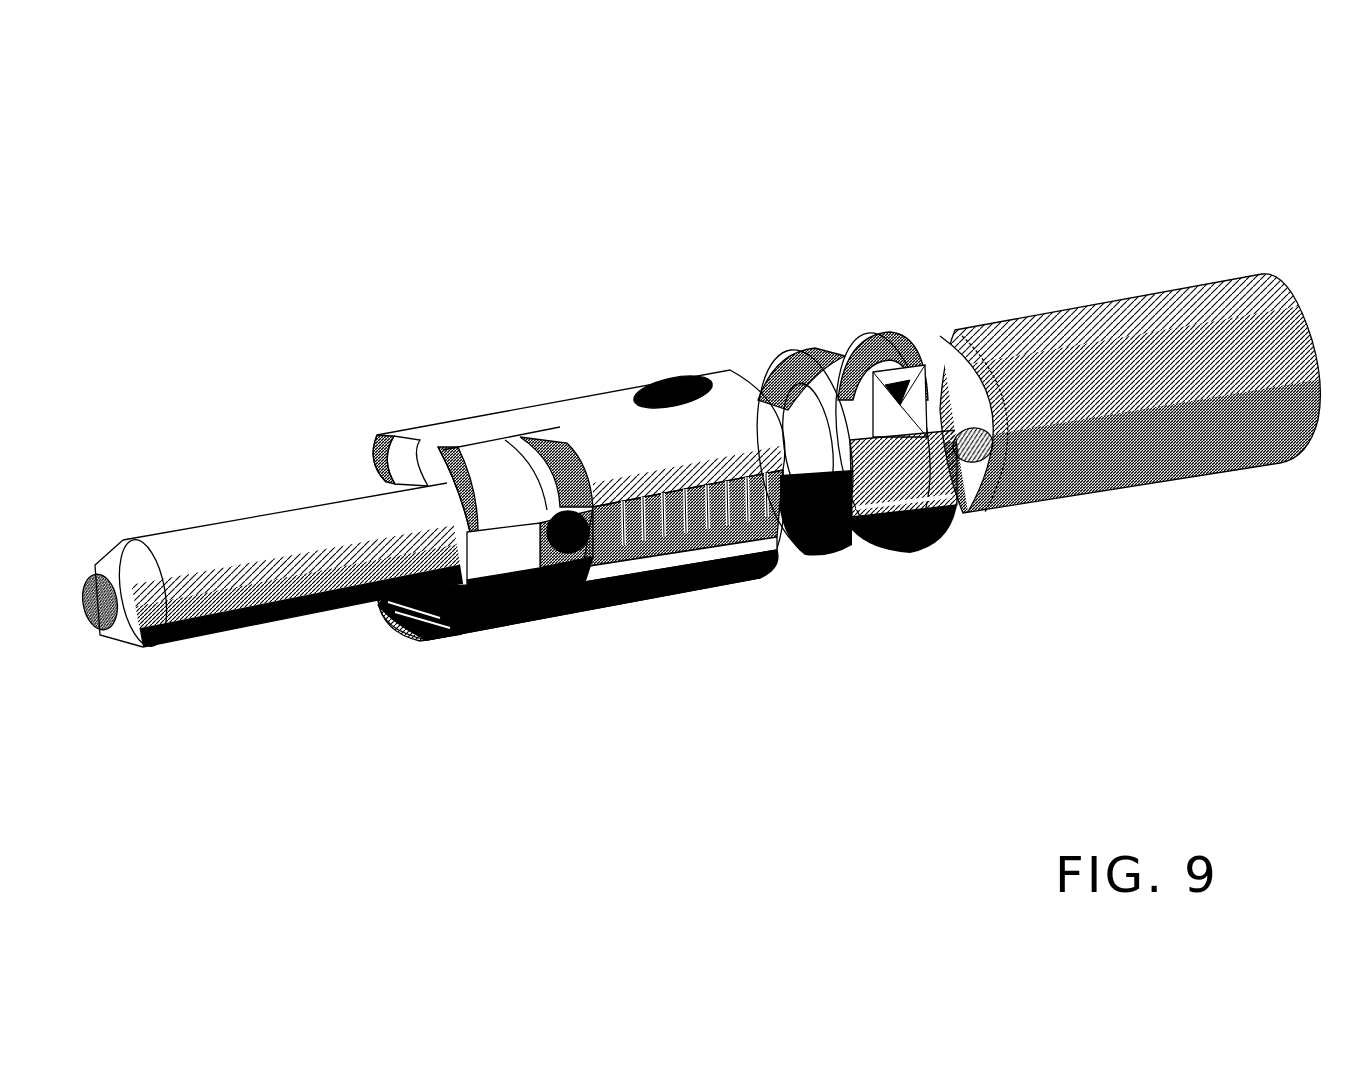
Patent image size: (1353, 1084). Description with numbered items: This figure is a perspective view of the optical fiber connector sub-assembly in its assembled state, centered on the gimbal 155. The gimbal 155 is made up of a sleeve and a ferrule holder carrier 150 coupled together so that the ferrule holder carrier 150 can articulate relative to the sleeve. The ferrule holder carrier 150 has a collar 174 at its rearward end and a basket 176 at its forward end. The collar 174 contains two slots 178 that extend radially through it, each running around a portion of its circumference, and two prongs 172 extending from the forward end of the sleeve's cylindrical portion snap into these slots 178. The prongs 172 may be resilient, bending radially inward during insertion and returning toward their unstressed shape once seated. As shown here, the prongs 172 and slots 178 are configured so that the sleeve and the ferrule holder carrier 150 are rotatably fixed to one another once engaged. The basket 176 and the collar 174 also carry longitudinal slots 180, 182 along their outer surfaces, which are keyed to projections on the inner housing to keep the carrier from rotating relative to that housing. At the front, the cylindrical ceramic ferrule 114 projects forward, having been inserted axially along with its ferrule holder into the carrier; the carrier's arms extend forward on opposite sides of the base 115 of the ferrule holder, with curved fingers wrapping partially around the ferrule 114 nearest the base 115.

The ferrule 114 is at (245, 535).
The base 115 is at (512, 636).
The ferrule holder carrier 150 is at (579, 576).
The gimbal 155 is at (750, 234).
The prongs 172 is at (871, 345).
The collar 174 is at (955, 527).
The basket 176 is at (452, 437).
The slots 178 is at (838, 346).
The longitudinal slot 180 is at (498, 562).
The longitudinal slot 182 is at (894, 478).